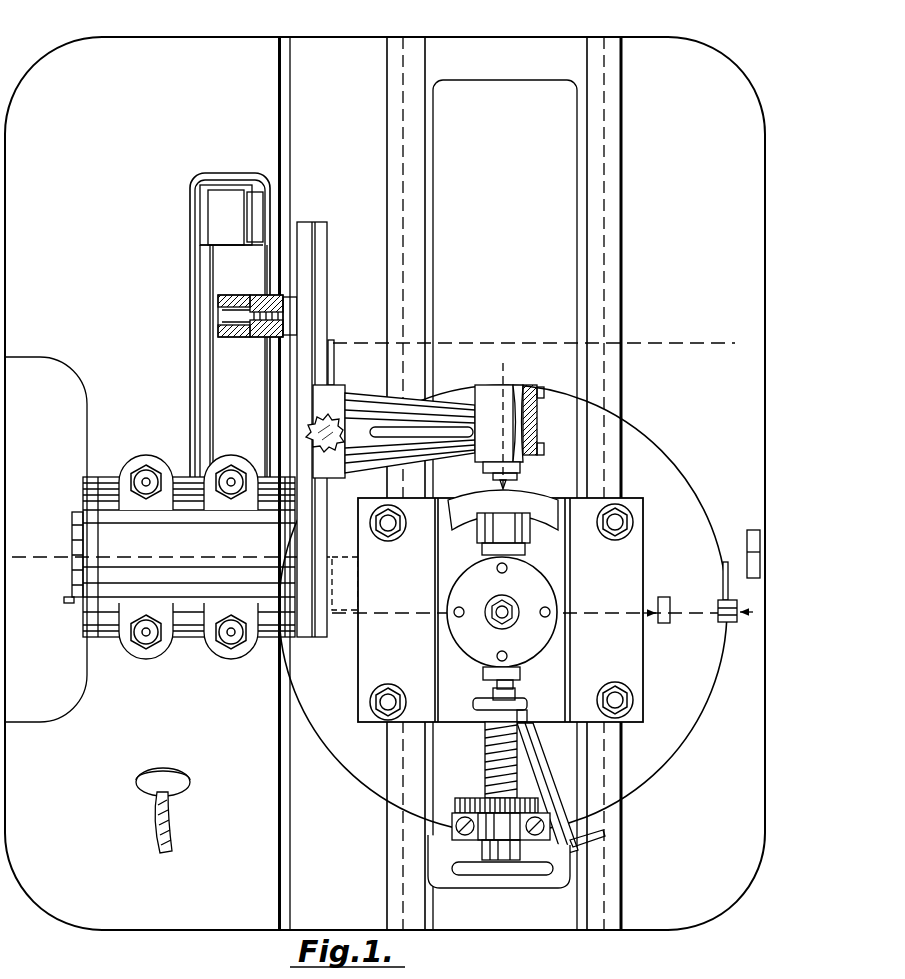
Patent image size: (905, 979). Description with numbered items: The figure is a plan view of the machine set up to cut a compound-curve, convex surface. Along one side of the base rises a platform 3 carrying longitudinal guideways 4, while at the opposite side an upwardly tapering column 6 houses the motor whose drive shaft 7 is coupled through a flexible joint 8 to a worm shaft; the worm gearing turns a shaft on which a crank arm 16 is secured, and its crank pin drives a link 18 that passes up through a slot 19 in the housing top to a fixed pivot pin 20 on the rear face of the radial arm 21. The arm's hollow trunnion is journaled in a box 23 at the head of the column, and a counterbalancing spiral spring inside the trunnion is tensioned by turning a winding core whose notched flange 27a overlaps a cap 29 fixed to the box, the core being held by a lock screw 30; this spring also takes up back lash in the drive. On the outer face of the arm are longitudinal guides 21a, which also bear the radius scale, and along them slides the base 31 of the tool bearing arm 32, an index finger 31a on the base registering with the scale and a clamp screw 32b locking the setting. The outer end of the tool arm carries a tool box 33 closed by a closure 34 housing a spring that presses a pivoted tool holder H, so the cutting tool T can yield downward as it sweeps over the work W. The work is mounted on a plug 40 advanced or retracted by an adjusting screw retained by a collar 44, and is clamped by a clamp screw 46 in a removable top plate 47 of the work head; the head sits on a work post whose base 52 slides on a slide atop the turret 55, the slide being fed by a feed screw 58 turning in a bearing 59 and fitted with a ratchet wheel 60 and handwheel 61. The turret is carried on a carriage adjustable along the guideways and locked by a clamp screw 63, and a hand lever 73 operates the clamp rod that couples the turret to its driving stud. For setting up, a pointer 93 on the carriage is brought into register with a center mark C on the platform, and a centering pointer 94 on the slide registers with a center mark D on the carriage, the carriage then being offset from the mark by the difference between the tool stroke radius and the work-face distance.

The platform 3 is at (370, 55).
The guideways 4 is at (592, 148).
The column 6 is at (88, 62).
The drive shaft 7 is at (22, 558).
The flexible joint 8 is at (372, 318).
The crank arm 16 is at (237, 268).
The link 18 is at (208, 404).
The slot 19 is at (196, 368).
The pivot pin 20 is at (222, 318).
The radial arm 21 is at (308, 230).
The guides 21a is at (317, 280).
The box 23 is at (122, 585).
The notched flange 27a is at (80, 532).
The cap 29 is at (85, 482).
The lock screw 30 is at (68, 603).
The base of tool arm 31 is at (336, 470).
The index finger 31a is at (334, 364).
The tool bearing arm 32 is at (400, 398).
The clamp screw 32b is at (305, 432).
The tool box 33 is at (540, 425).
The closure 34 is at (518, 398).
The plug 40 is at (483, 548).
The collar 44 is at (522, 673).
The clamp screw 46 is at (510, 605).
The top plate 47 is at (495, 640).
The base of work post 52 is at (545, 692).
The turret 55 is at (650, 745).
The feed screw 58 is at (492, 742).
The bearing 59 is at (500, 828).
The ratchet wheel 60 is at (540, 808).
The handwheel 61 is at (555, 870).
The clamp screw 63 is at (722, 624).
The hand lever 73 is at (590, 848).
The index finger 93 is at (742, 608).
The centering pointer 94 is at (648, 616).
The center mark C is at (750, 530).
The center mark D is at (690, 607).
The tool holder H is at (545, 467).
The cutting tool T is at (565, 497).
The work W is at (593, 548).